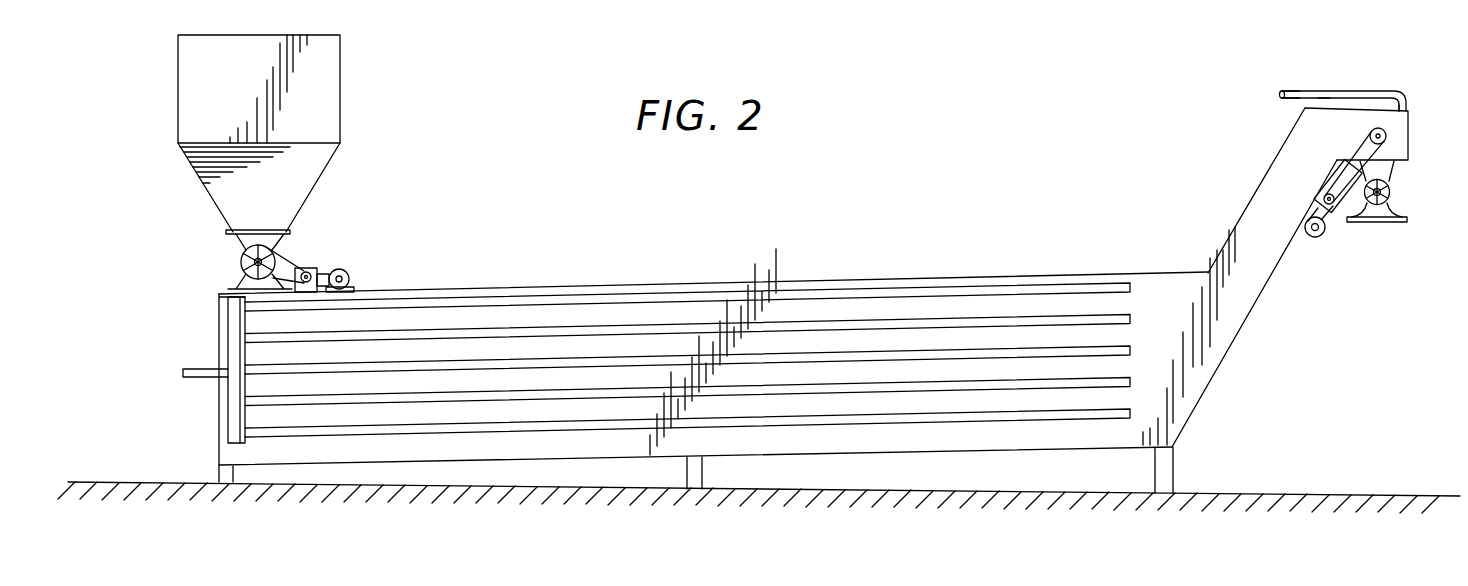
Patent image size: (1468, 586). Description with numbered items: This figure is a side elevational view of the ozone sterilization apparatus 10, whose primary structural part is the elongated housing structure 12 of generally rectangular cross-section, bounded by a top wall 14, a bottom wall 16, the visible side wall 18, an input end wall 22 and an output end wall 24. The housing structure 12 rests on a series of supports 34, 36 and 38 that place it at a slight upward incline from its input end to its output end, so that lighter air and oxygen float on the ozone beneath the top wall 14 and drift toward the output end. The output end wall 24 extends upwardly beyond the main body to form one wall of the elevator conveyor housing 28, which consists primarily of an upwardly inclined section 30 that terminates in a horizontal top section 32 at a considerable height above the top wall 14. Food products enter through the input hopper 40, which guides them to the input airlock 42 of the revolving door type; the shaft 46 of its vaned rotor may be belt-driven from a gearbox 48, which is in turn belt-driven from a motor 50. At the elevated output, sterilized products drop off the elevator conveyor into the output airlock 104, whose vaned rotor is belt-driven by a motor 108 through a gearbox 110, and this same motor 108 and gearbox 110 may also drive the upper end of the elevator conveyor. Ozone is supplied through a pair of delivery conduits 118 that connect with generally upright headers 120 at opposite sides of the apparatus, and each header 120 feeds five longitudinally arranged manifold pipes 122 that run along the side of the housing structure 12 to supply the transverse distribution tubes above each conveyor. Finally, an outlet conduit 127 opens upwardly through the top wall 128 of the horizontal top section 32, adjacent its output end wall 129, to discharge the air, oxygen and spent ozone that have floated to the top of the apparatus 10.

The ozone sterilization apparatus 10 is at (685, 344).
The elongated housing structure 12 is at (578, 282).
The top wall 14 is at (733, 289).
The bottom wall 16 is at (850, 452).
The side wall 18 is at (902, 306).
The input end wall 22 is at (219, 404).
The output end wall 24 is at (1243, 329).
The elevator conveyor housing 28 is at (1262, 149).
The upwardly inclined section 30 is at (1248, 205).
The horizontal top section 32 is at (1346, 108).
The support 34 is at (218, 474).
The support 36 is at (702, 472).
The support 38 is at (1155, 471).
The input hopper 40 is at (342, 110).
The input airlock 42 is at (228, 261).
The shaft 46 is at (259, 250).
The gearbox 48 is at (315, 268).
The motor 50 is at (343, 270).
The output airlock 104 is at (1398, 195).
The motor 108 is at (1313, 238).
The gearbox 110 is at (1331, 208).
The delivery conduit 118 is at (196, 369).
The header 120 is at (232, 310).
The manifold pipe 122 is at (641, 300).
The outlet conduit 127 is at (1302, 90).
The top wall 128 is at (1322, 100).
The output end wall 129 is at (1414, 120).